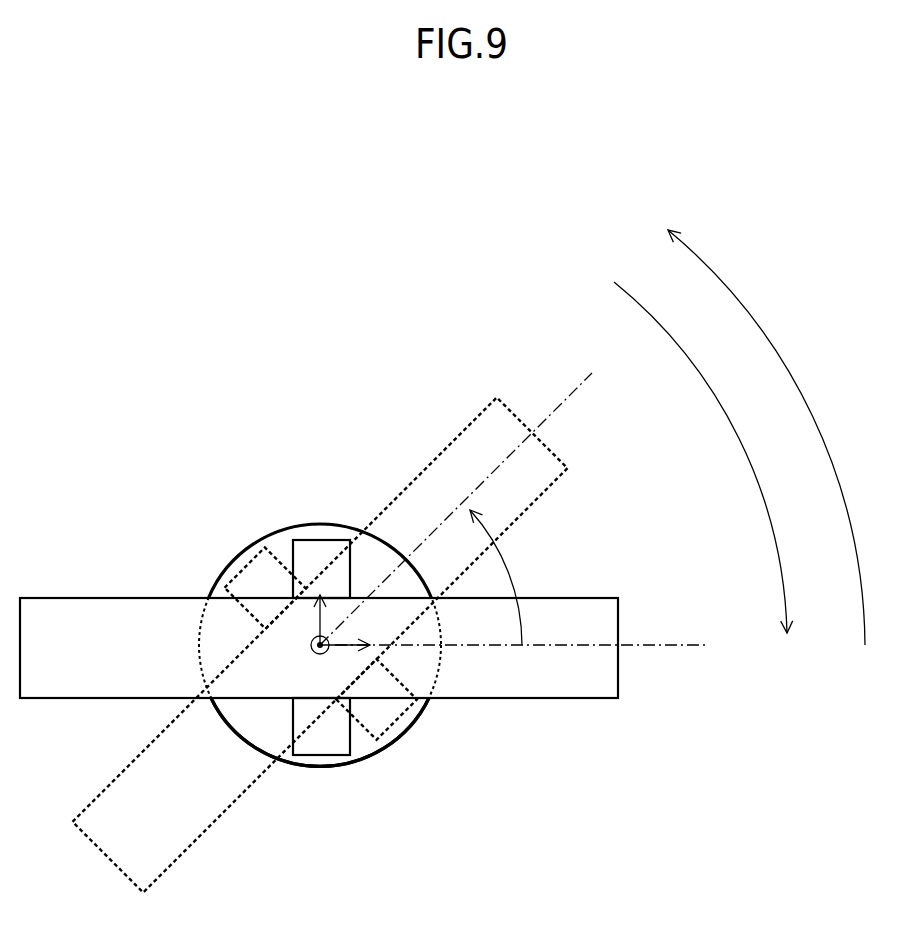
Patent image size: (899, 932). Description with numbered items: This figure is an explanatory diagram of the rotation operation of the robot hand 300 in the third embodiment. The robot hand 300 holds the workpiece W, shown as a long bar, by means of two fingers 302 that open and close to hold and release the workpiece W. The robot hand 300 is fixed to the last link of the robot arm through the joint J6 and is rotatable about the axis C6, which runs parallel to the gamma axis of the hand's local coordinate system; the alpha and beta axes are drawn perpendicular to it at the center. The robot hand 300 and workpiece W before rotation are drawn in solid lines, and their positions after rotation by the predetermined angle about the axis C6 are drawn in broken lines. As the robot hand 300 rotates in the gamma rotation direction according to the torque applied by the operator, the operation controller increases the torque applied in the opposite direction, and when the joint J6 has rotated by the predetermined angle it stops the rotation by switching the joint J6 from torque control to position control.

The robot hand 300 is at (248, 520).
The fingers 302 is at (313, 540).
The workpiece W is at (427, 465).
The axis C6 is at (312, 641).
The joint J6 is at (370, 772).